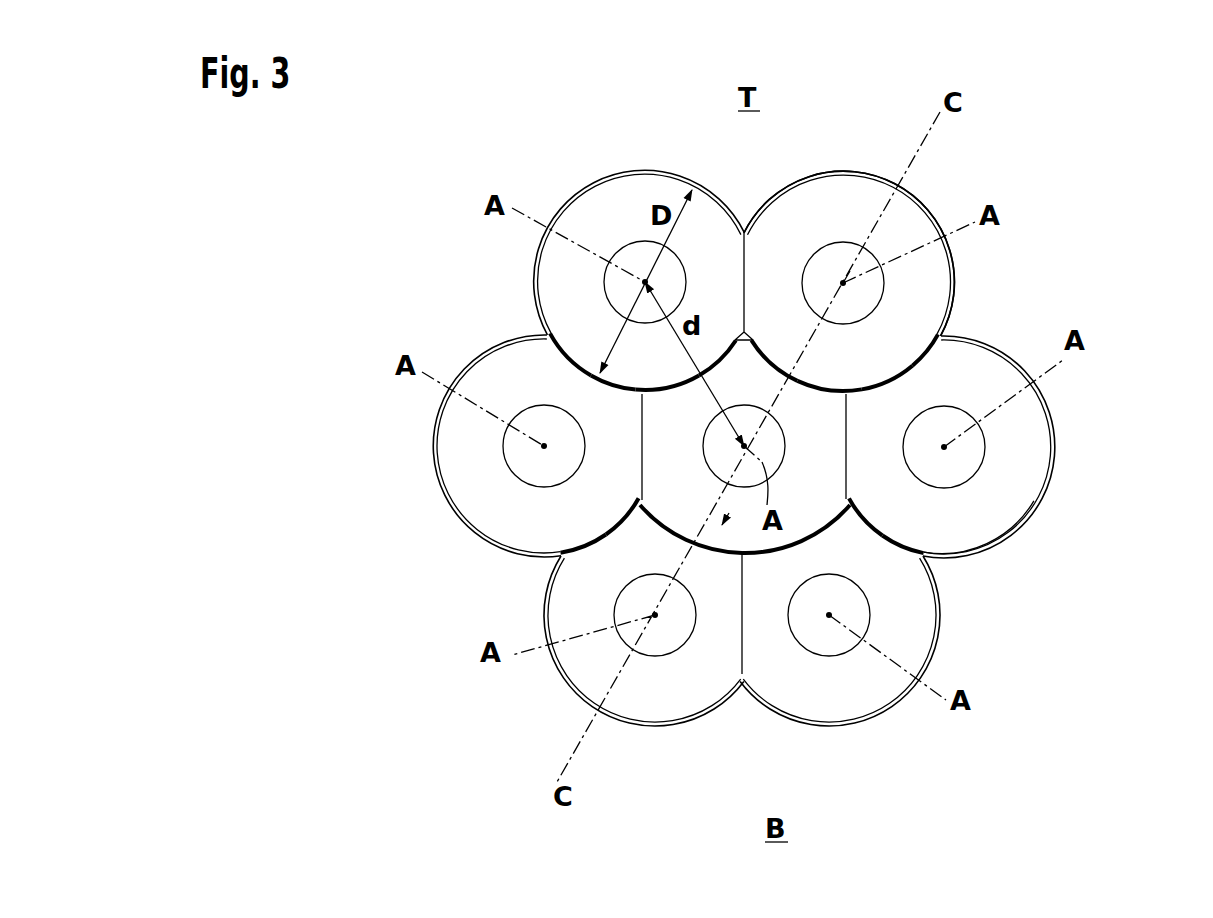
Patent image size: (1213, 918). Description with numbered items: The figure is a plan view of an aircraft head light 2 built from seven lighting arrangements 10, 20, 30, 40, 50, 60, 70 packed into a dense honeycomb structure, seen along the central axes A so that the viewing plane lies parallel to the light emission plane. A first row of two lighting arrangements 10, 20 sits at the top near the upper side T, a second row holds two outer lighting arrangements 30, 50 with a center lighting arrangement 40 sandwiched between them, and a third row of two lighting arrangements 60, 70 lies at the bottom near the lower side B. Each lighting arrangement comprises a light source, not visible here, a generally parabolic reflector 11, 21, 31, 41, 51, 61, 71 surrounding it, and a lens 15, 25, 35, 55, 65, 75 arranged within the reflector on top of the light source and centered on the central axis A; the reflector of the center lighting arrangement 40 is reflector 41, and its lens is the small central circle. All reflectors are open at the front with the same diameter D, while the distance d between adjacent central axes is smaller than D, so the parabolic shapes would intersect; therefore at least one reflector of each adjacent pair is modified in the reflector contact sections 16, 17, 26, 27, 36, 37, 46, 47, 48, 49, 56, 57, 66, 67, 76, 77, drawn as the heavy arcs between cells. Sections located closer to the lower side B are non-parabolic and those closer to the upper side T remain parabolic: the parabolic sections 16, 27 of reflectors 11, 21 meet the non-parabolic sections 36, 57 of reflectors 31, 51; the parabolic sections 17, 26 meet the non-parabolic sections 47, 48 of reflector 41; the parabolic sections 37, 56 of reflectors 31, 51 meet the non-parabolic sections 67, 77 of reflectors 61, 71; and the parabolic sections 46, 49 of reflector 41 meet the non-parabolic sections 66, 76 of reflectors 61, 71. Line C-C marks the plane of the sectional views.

The aircraft head light 2 is at (1133, 172).
The first row lighting arrangement 10 is at (599, 165).
The reflector 11 is at (630, 203).
The lens 15 is at (626, 257).
The reflector contact section 16 is at (590, 358).
The reflector contact section 17 is at (710, 350).
The first row lighting arrangement 20 is at (987, 180).
The reflector 21 is at (927, 266).
The lens 25 is at (880, 258).
The reflector contact section 26 is at (780, 352).
The reflector contact section 27 is at (887, 358).
The second row outer lighting arrangement 30 is at (435, 511).
The reflector 31 is at (508, 367).
The lens 35 is at (520, 445).
The reflector contact section 36 is at (557, 362).
The reflector contact section 37 is at (583, 535).
The second row center lighting arrangement 40 is at (753, 368).
The reflector 41 is at (887, 570).
The reflector contact section 46 is at (745, 508).
The reflector contact section 47 is at (683, 397).
The reflector contact section 48 is at (836, 466).
The reflector contact section 49 is at (812, 402).
The second row outer lighting arrangement 50 is at (1077, 478).
The reflector 51 is at (1023, 423).
The lens 55 is at (965, 452).
The reflector contact section 56 is at (895, 520).
The reflector contact section 57 is at (938, 370).
The third row lighting arrangement 60 is at (558, 710).
The reflector 61 is at (637, 690).
The lens 65 is at (614, 634).
The reflector contact section 66 is at (713, 572).
The reflector contact section 67 is at (595, 557).
The third row lighting arrangement 70 is at (916, 716).
The reflector 71 is at (873, 673).
The lens 75 is at (834, 652).
The reflector contact section 76 is at (777, 566).
The reflector contact section 77 is at (893, 555).